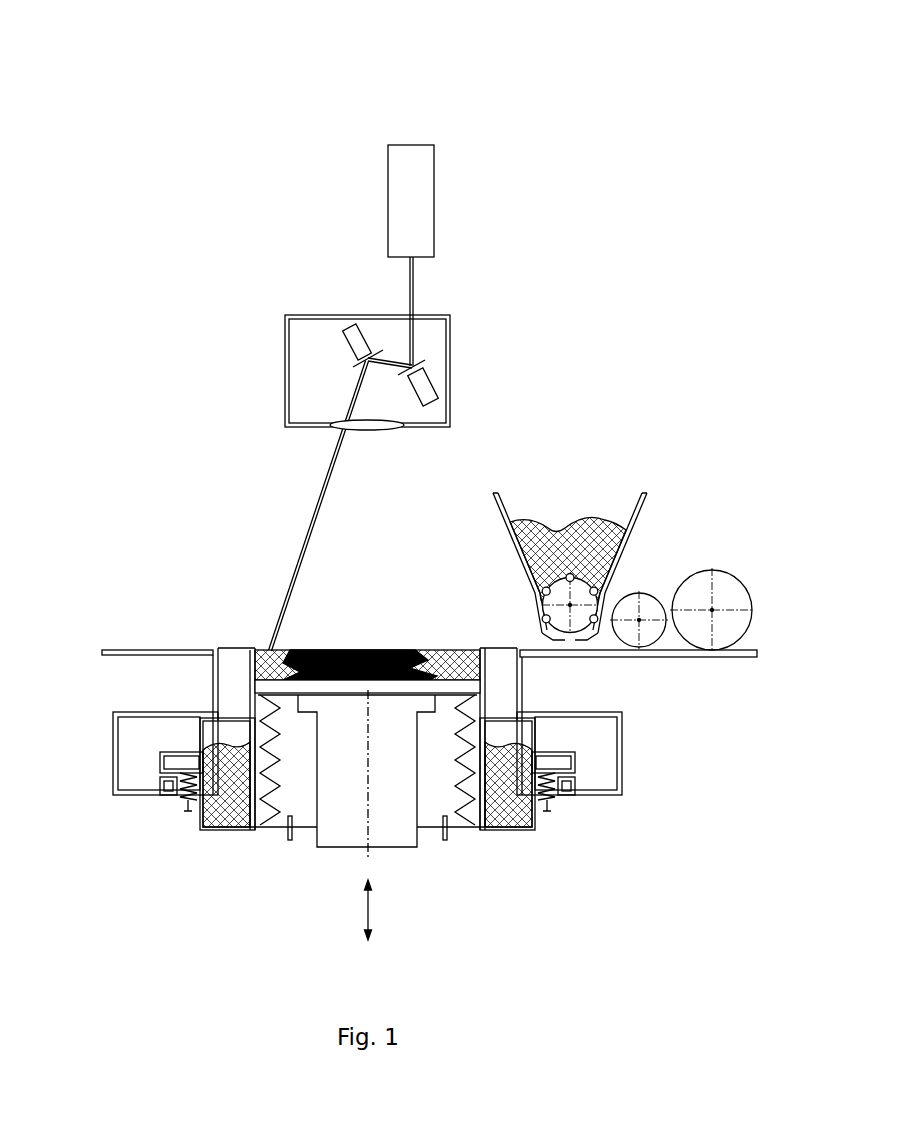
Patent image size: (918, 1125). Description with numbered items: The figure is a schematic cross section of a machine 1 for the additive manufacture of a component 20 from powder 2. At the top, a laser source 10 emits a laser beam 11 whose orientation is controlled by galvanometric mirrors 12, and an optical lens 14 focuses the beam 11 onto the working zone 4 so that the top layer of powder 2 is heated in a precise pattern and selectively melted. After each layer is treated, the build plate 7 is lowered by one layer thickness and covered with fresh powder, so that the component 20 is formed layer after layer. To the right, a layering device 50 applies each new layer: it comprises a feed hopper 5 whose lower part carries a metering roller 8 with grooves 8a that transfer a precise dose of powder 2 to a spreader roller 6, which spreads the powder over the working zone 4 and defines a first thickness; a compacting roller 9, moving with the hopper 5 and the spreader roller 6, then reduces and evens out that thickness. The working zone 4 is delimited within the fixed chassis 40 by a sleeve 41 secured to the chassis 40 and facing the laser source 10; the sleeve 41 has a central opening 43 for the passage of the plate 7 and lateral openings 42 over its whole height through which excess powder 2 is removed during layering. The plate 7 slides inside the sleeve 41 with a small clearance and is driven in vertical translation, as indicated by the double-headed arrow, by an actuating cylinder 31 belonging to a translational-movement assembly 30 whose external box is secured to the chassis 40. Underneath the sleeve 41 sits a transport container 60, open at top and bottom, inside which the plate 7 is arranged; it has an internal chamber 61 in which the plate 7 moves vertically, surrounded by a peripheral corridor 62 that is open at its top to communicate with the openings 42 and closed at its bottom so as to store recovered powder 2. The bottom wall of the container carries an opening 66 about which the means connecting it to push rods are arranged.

The machine 1 is at (177, 163).
The laser source 10 is at (418, 195).
The laser beam 11 is at (415, 303).
The galvanometric mirrors 12 is at (352, 325).
The optical lens 14 is at (348, 428).
The working zone 4 is at (273, 642).
The powder 2 is at (268, 668).
The fixed chassis 40 is at (153, 652).
The component 20 is at (500, 679).
The sleeve 41 is at (258, 688).
The lateral openings 42 is at (505, 681).
The central opening 43 is at (263, 708).
The transport container 60 is at (218, 827).
The peripheral corridor 62 is at (530, 740).
The build plate 7 is at (412, 685).
The translational-movement assembly 30 is at (445, 708).
The actuating cylinder 31 is at (392, 783).
The internal chamber 61 is at (302, 768).
The opening 66 is at (430, 828).
The layering device 50 is at (647, 465).
The feed hopper 5 is at (542, 545).
The metering roller 8 is at (560, 595).
The grooves 8a is at (540, 623).
The spreader roller 6 is at (650, 600).
The compacting roller 9 is at (722, 597).